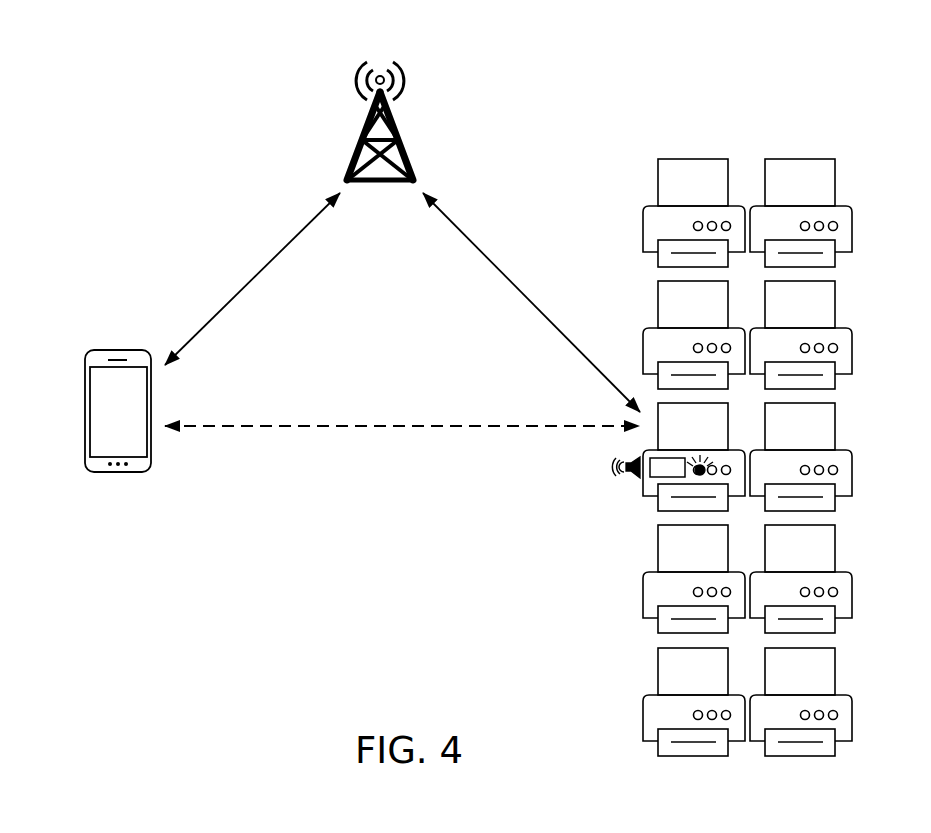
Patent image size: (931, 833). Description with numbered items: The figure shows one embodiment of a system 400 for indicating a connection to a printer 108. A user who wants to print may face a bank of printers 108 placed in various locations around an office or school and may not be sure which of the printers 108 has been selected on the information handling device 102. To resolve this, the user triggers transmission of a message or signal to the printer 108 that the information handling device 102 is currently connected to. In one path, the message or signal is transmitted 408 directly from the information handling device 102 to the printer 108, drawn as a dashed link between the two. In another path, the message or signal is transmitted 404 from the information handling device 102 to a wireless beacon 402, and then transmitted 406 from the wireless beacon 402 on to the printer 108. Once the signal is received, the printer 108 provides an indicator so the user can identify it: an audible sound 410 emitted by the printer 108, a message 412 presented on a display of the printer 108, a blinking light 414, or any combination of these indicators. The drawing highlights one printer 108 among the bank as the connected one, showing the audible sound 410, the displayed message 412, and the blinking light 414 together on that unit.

The system for indicating a connection to a printer 400 is at (122, 62).
The wireless beacon 402 is at (346, 80).
The transmission via wireless beacon 404 is at (258, 275).
The transmission to the printer 406 is at (506, 279).
The direct transmission to the printer 408 is at (386, 424).
The information handling device 102 is at (86, 397).
The printer 108 is at (855, 152).
The audible sound 410 is at (613, 470).
The message presented on a display of the printer 412 is at (650, 477).
The blinking light 414 is at (708, 458).